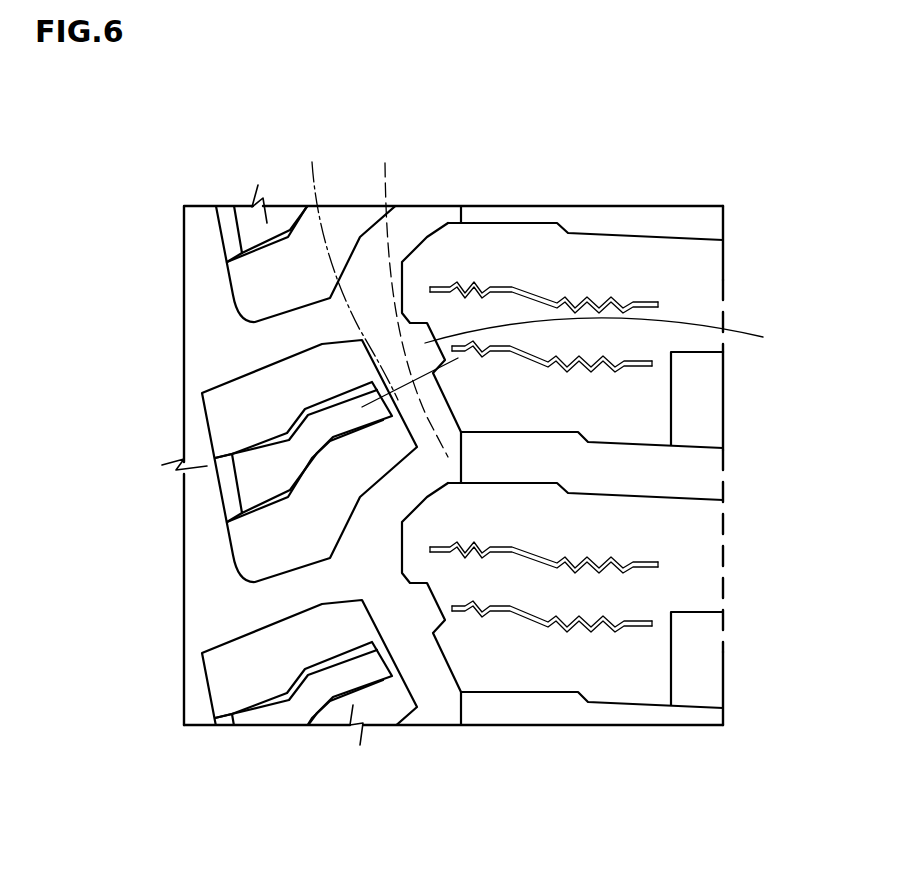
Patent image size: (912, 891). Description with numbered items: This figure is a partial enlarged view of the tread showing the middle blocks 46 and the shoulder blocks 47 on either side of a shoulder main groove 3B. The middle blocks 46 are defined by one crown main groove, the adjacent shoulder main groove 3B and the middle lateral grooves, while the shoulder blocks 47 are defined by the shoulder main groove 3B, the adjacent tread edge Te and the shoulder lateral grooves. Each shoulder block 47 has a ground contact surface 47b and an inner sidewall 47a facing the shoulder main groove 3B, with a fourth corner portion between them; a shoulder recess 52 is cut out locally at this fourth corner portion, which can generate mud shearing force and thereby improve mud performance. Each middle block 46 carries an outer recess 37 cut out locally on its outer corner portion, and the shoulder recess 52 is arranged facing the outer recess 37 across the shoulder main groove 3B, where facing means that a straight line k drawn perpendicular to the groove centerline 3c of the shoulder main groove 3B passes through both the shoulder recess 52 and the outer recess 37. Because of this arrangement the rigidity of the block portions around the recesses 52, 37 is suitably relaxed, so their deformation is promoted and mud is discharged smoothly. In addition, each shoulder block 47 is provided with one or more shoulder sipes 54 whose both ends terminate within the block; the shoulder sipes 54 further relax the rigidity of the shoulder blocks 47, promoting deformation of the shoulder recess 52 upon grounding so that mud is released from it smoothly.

The shoulder main groove 3B is at (418, 658).
The groove centerline 3c is at (408, 295).
The straight line k is at (352, 265).
The outer recess 37 is at (370, 389).
The middle block 46 is at (287, 535).
The shoulder block 47 is at (560, 655).
The inner sidewall 47a is at (432, 232).
The ground contact surface 47b is at (562, 268).
The shoulder recess 52 is at (611, 334).
The shoulder sipe 54 is at (658, 306).
The tread edge Te is at (723, 224).